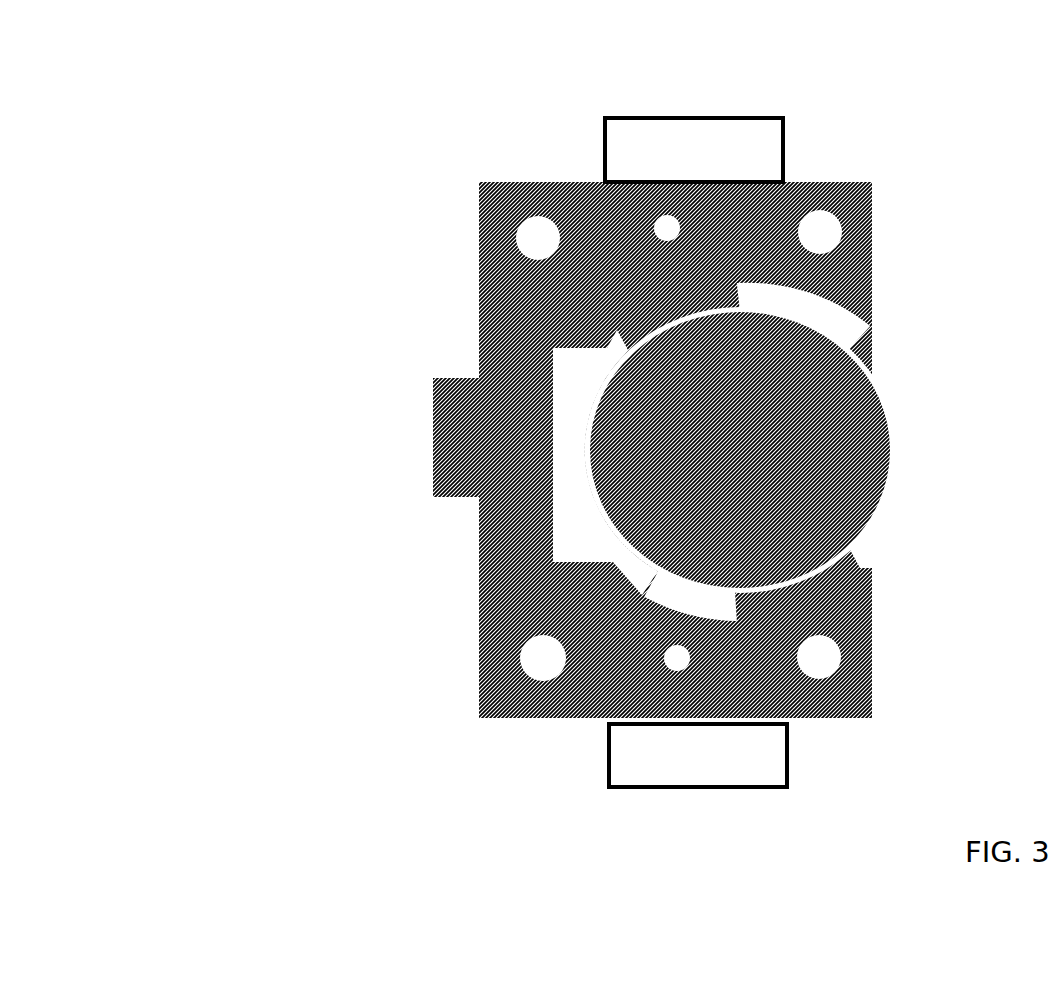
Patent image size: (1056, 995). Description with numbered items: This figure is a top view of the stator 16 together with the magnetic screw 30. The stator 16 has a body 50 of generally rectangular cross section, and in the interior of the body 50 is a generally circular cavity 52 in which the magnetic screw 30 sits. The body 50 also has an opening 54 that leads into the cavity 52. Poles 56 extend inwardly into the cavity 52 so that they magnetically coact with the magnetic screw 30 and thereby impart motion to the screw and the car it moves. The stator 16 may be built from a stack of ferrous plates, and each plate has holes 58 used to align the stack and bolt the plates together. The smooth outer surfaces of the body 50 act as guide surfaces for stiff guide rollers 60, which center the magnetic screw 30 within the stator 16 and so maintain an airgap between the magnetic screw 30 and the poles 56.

The stator 16 is at (626, 431).
The magnetic screw 30 is at (897, 422).
The body 50 is at (813, 182).
The cavity 52 is at (673, 595).
The opening 54 is at (875, 352).
The poles 56 is at (658, 314).
The holes 58 is at (537, 222).
The guide rollers 60 is at (748, 112).